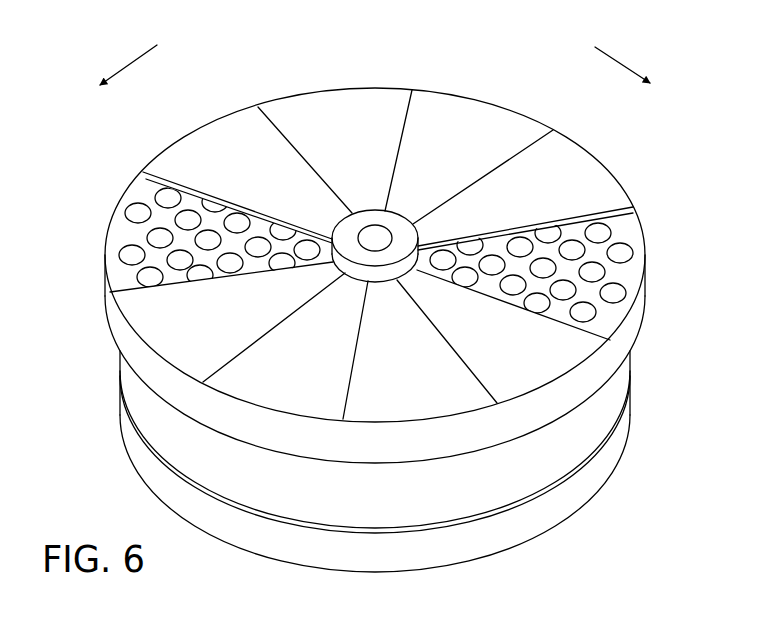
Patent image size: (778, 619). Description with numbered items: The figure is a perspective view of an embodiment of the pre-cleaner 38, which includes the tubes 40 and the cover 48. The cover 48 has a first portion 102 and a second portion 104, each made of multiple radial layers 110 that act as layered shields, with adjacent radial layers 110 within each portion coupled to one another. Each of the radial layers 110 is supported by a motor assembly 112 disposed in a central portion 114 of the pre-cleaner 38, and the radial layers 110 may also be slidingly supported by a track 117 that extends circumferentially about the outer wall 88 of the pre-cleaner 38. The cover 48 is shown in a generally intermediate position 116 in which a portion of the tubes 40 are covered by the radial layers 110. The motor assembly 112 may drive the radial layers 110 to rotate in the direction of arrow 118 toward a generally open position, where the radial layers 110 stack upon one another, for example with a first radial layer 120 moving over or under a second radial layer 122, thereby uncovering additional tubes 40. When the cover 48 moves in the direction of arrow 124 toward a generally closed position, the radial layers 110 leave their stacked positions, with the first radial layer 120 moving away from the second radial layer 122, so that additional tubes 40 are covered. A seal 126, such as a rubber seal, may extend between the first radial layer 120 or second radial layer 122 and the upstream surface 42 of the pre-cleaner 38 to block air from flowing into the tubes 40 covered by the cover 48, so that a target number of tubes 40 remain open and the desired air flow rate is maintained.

The pre-cleaner 38 is at (690, 117).
The tubes 40 is at (128, 253).
The upstream surface 42 is at (123, 273).
The cover 48 is at (512, 102).
The outer wall 88 is at (150, 408).
The first portion 102 is at (567, 132).
The second portion 104 is at (550, 390).
The radial layers 110 is at (318, 90).
The motor assembly 112 is at (392, 222).
The central portion 114 is at (362, 205).
The intermediate position 116 is at (222, 87).
The track 117 is at (593, 375).
The arrow 118 is at (618, 58).
The first radial layer 120 is at (205, 124).
The second radial layer 122 is at (615, 177).
The arrow 124 is at (133, 58).
The seal 126 is at (188, 186).